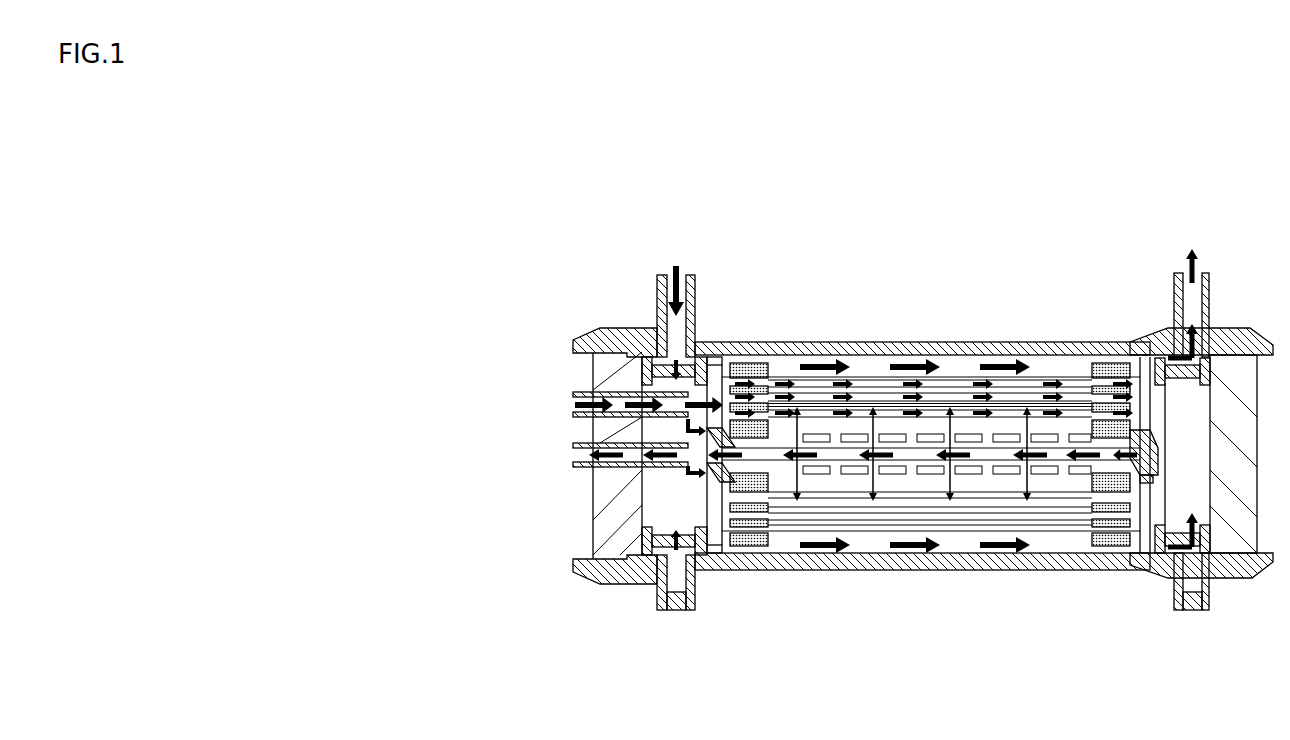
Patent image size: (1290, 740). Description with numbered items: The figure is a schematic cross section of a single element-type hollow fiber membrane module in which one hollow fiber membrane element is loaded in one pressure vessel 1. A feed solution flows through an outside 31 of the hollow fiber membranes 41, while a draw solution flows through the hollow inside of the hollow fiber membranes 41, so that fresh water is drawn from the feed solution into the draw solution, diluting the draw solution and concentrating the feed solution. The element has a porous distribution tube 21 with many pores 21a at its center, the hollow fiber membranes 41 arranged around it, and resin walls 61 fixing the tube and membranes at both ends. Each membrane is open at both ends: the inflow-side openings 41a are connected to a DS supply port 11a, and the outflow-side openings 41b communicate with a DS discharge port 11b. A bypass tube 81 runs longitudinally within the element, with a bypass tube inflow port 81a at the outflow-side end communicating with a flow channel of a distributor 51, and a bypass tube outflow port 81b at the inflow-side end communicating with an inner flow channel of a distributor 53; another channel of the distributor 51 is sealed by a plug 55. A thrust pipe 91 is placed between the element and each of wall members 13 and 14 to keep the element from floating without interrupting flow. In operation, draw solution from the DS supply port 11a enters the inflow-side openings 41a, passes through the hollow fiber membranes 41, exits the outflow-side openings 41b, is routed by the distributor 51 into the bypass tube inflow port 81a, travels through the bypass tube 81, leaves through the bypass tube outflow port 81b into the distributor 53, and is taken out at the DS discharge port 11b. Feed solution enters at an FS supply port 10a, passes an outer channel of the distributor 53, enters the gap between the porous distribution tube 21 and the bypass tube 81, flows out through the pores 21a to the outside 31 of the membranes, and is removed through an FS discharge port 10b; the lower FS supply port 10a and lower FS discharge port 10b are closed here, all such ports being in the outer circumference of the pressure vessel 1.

The pressure vessel 1 is at (925, 343).
The FS supply port 10a is at (657, 298).
The FS discharge port 10b is at (1210, 286).
The DS supply port 11a is at (594, 352).
The DS discharge port 11b is at (574, 380).
The wall member 13 is at (615, 545).
The wall member 14 is at (1238, 550).
The porous distribution tube 21 is at (968, 476).
The pores 21a is at (866, 480).
The outside of hollow fiber membranes 31 is at (1033, 415).
The hollow fiber membranes 41 is at (863, 378).
The inflow-side openings 41a is at (715, 358).
The outflow-side openings 41b is at (1158, 362).
The distributor 51 is at (1142, 535).
The distributor 53 is at (715, 556).
The plug 55 is at (1158, 458).
The resin walls 61 is at (758, 545).
The bypass tube 81 is at (912, 465).
The bypass tube inflow port 81a is at (1097, 400).
The bypass tube outflow port 81b is at (748, 400).
The thrust pipe 91 is at (643, 565).